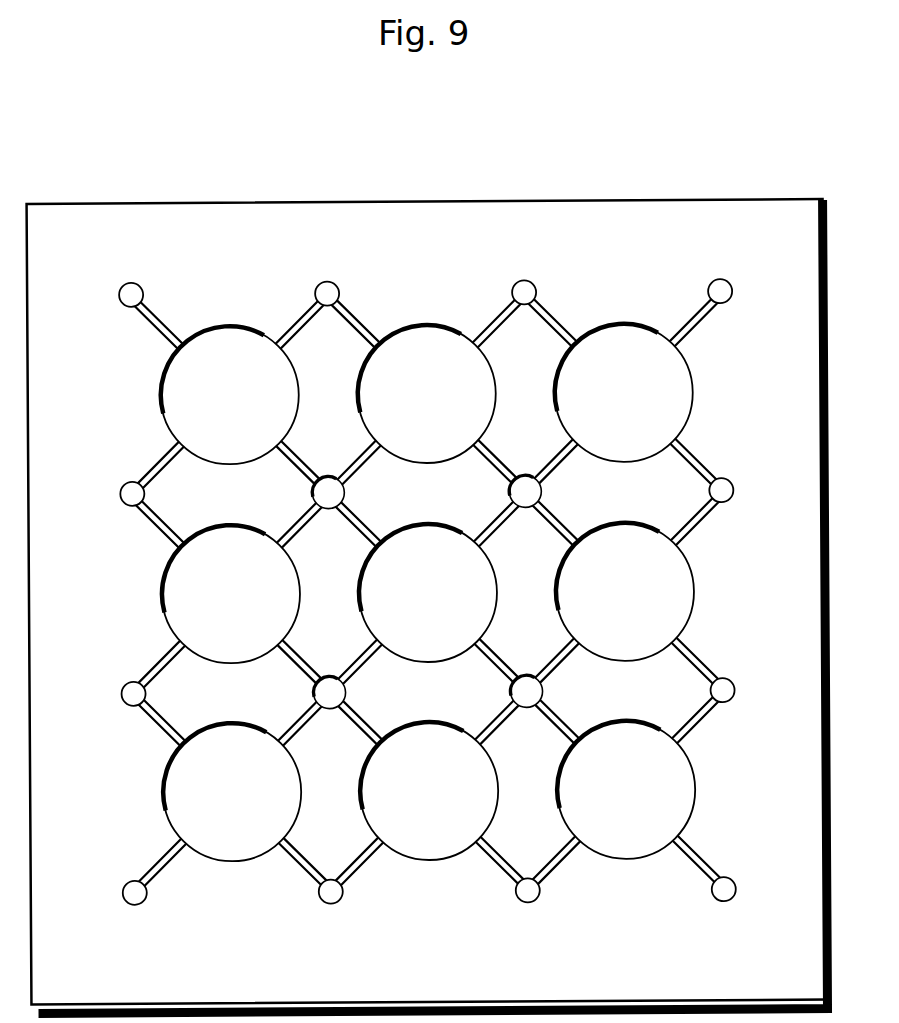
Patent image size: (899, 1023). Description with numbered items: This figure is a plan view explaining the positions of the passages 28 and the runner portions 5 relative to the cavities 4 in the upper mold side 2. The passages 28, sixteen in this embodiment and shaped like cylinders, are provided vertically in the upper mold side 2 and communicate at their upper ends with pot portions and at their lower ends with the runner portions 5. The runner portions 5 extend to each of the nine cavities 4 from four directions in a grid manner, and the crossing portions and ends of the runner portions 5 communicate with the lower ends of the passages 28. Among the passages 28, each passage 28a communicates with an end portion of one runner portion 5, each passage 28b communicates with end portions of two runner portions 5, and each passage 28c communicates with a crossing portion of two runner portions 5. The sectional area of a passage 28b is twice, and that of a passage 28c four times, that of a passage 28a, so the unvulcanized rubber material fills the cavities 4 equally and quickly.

The upper mold side 2 is at (571, 197).
The cavity 4 is at (639, 410).
The runner portion 5 is at (156, 328).
The passage 28 is at (439, 588).
The passage 28a is at (733, 897).
The passage 28b is at (125, 681).
The passage 28c is at (514, 692).